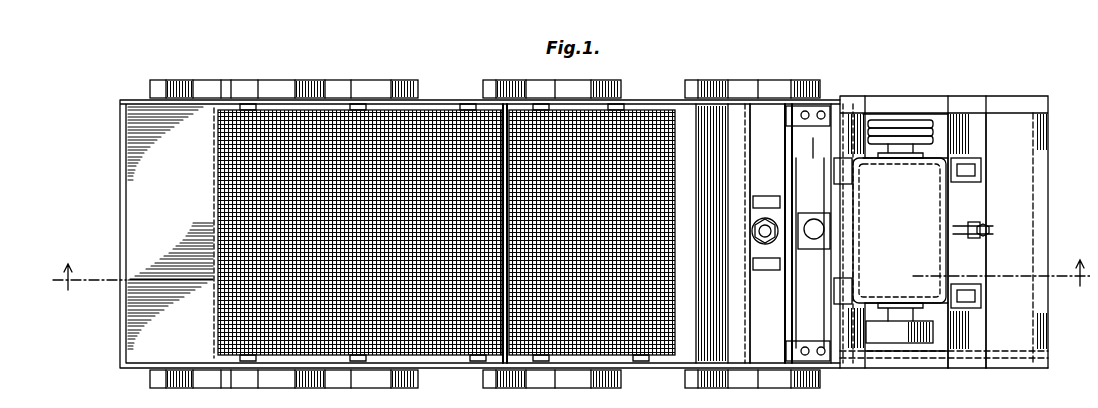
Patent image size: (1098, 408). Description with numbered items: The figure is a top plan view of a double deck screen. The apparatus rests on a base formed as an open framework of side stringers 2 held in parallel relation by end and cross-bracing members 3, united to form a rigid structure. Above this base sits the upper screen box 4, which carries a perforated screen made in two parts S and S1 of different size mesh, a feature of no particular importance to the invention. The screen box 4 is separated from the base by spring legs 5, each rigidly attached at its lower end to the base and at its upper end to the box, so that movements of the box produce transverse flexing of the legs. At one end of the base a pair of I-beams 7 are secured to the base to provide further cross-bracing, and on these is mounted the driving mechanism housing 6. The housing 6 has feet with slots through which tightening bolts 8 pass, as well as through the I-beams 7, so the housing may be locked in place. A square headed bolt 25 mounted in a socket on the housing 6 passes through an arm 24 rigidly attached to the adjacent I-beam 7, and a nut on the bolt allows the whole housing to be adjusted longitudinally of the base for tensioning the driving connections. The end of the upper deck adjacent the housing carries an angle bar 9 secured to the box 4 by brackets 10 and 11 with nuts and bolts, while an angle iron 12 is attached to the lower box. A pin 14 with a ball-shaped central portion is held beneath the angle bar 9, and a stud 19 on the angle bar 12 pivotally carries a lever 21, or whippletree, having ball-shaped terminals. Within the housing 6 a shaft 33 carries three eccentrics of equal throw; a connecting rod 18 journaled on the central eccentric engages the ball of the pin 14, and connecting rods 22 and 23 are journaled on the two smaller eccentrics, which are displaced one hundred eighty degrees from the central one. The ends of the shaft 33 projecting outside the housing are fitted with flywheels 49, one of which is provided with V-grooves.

The side stringers 2 is at (1006, 100).
The end and cross-bracing members 3 is at (571, 270).
The screen box 4 is at (448, 92).
The spring legs 5 is at (237, 364).
The driving mechanism housing 6 is at (899, 230).
The I-beams 7 is at (976, 128).
The tightening bolts 8 is at (974, 162).
The angle bar 9 is at (845, 98).
The bracket 10 is at (773, 88).
The bracket 11 is at (810, 122).
The angle iron 12 is at (762, 322).
The pin 14 is at (818, 162).
The connecting rod 18 is at (823, 226).
The stud 19 is at (745, 223).
The lever 21 is at (746, 232).
The connecting rod 22 is at (768, 192).
The connecting rod 23 is at (768, 264).
The arm 24 is at (984, 220).
The square headed bolt 25 is at (978, 232).
The shaft 33 is at (892, 342).
The flywheels 49 is at (890, 110).
The screen S is at (419, 344).
The screen S1 is at (612, 350).